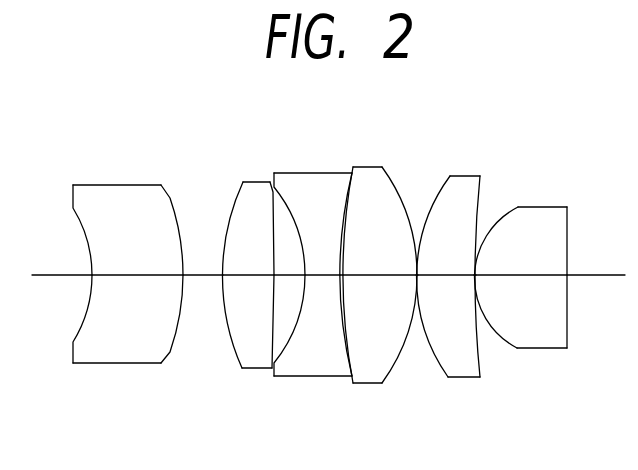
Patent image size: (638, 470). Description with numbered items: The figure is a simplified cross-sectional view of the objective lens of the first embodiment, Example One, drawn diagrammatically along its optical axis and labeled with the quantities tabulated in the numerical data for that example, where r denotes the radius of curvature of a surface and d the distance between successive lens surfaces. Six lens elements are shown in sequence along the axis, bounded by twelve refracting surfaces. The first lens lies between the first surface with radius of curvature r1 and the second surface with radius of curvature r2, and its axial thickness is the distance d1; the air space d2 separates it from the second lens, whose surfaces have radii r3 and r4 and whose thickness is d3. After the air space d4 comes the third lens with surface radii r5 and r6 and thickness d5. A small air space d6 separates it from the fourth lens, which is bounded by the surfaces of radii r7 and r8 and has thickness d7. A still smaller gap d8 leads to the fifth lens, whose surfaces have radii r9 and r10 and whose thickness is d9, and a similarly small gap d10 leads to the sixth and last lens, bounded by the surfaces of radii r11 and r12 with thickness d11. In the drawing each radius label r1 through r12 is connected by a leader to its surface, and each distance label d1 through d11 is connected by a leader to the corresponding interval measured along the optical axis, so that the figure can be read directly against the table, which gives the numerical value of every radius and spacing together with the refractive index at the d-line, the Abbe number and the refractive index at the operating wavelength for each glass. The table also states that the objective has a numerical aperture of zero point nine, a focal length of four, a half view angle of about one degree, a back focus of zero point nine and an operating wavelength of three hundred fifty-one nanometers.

The radius of curvature of first lens surface r1 is at (77, 216).
The radius of curvature of second lens surface r2 is at (170, 201).
The radius of curvature of third lens surface r3 is at (238, 200).
The radius of curvature of fourth lens surface r4 is at (272, 202).
The radius of curvature of fifth lens surface r5 is at (284, 210).
The radius of curvature of sixth lens surface r6 is at (345, 220).
The radius of curvature of seventh lens surface r7 is at (344, 205).
The radius of curvature of eighth lens surface r8 is at (408, 218).
The radius of curvature of ninth lens surface r9 is at (438, 198).
The radius of curvature of tenth lens surface r10 is at (482, 194).
The radius of curvature of eleventh lens surface r11 is at (504, 214).
The radius of curvature of twelfth lens surface r12 is at (568, 262).
The distance between first and second lens surfaces d1 is at (137, 275).
The distance between second and third lens surfaces d2 is at (203, 275).
The distance between third and fourth lens surfaces d3 is at (250, 275).
The distance between fourth and fifth lens surfaces d4 is at (287, 275).
The distance between fifth and sixth lens surfaces d5 is at (320, 275).
The distance between sixth and seventh lens surfaces d6 is at (343, 285).
The distance between seventh and eighth lens surfaces d7 is at (380, 275).
The distance between eighth and ninth lens surfaces d8 is at (417, 290).
The distance between ninth and tenth lens surfaces d9 is at (444, 275).
The distance between tenth and eleventh lens surfaces d10 is at (477, 290).
The distance between eleventh and twelfth lens surfaces d11 is at (543, 275).